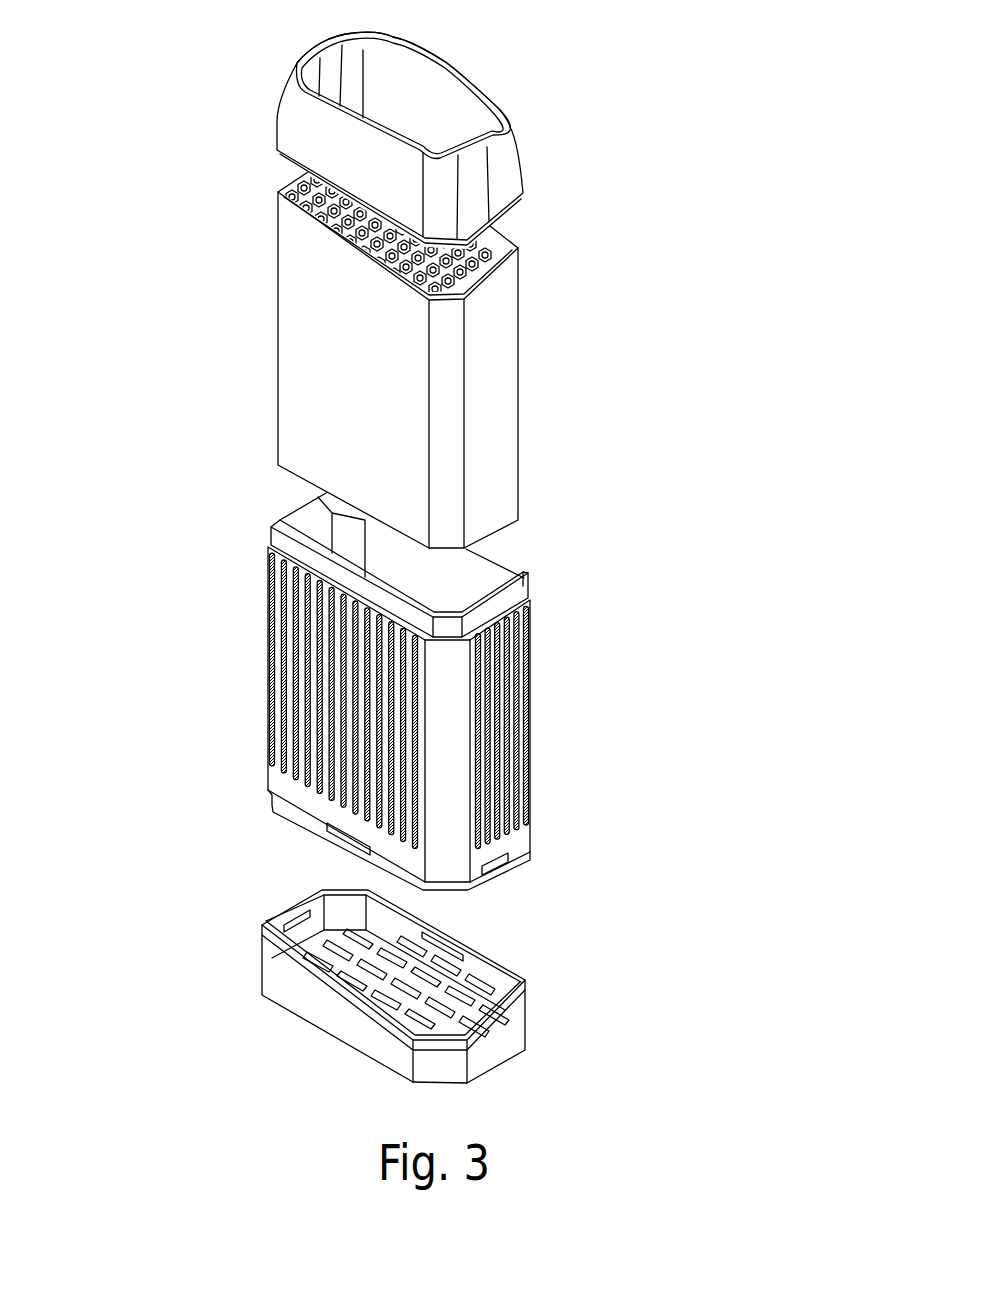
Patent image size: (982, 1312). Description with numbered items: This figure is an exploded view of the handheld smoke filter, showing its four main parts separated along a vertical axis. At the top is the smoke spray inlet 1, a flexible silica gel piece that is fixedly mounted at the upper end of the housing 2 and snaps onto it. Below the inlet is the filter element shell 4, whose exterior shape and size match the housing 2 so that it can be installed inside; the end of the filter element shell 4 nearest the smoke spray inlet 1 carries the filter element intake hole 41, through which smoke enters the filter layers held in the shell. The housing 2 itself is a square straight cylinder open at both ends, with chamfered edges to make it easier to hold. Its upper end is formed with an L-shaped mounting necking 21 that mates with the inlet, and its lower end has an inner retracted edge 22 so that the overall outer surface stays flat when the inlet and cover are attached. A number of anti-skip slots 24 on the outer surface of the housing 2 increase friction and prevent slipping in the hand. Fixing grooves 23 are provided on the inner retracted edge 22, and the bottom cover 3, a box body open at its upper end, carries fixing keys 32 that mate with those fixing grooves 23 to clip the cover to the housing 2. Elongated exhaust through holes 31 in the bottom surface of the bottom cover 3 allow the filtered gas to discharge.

The smoke spray inlet 1 is at (317, 137).
The filter element shell 4 is at (317, 355).
The filter element intake hole 41 is at (487, 273).
The housing 2 is at (290, 672).
The mounting necking 21 is at (517, 600).
The anti-skip slots 24 is at (650, 703).
The inner retracted edge 22 is at (285, 812).
The fixing grooves 23 is at (650, 858).
The bottom cover 3 is at (287, 983).
The exhaust through holes 31 is at (490, 1003).
The fixing keys 32 is at (270, 922).